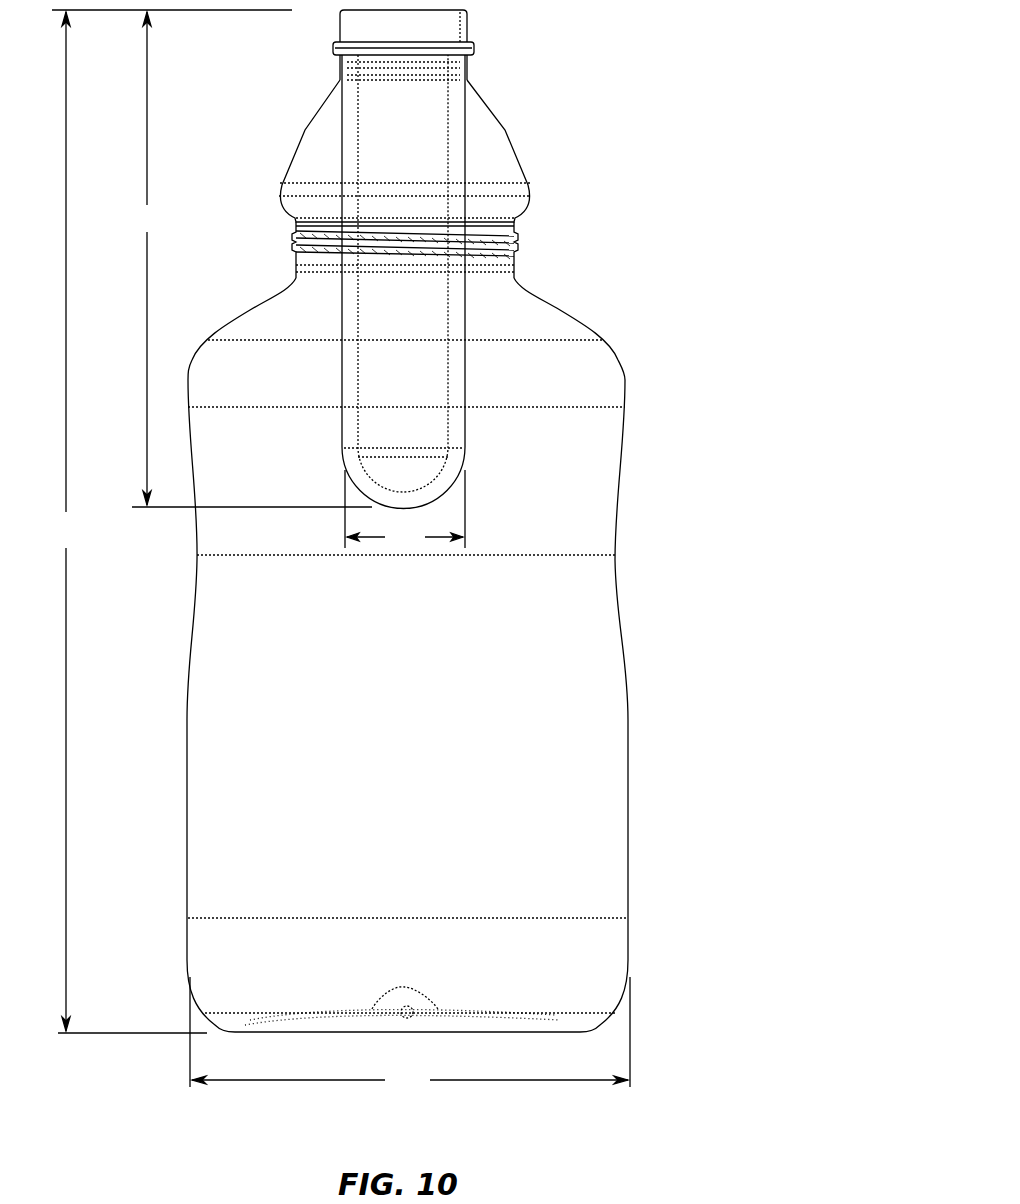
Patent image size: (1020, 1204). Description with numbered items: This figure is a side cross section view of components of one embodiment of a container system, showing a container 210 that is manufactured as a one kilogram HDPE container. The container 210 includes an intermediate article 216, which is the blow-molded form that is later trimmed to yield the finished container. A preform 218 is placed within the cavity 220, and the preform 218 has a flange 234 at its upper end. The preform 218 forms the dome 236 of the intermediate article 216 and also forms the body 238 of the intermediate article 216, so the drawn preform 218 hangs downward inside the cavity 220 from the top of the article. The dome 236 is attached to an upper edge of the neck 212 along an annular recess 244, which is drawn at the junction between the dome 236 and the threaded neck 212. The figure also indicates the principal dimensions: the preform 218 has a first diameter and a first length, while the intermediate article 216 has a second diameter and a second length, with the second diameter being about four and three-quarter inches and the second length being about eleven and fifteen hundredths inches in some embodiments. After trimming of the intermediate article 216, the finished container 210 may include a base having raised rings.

The container 210 is at (722, 36).
The neck 212 is at (512, 243).
The intermediate article 216 is at (695, 752).
The preform 218 is at (470, 136).
The cavity 220 is at (585, 603).
The flange 234 is at (475, 47).
The dome 236 is at (308, 172).
The body 238 is at (210, 737).
The annular recess 244 is at (505, 232).